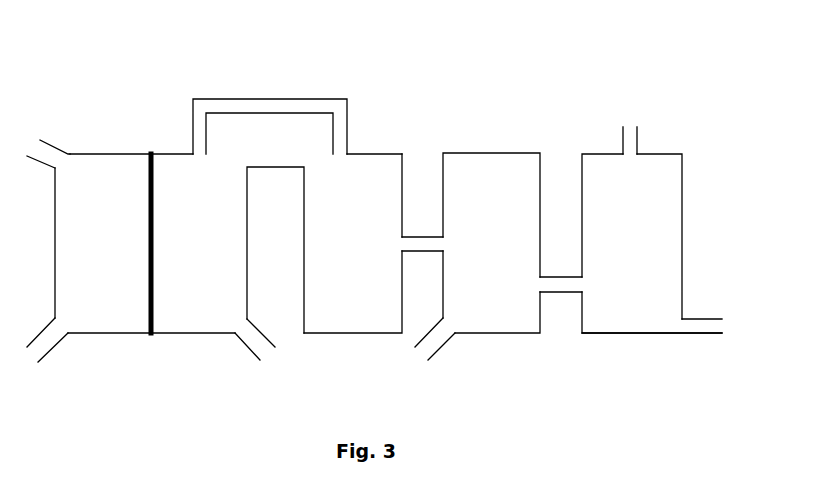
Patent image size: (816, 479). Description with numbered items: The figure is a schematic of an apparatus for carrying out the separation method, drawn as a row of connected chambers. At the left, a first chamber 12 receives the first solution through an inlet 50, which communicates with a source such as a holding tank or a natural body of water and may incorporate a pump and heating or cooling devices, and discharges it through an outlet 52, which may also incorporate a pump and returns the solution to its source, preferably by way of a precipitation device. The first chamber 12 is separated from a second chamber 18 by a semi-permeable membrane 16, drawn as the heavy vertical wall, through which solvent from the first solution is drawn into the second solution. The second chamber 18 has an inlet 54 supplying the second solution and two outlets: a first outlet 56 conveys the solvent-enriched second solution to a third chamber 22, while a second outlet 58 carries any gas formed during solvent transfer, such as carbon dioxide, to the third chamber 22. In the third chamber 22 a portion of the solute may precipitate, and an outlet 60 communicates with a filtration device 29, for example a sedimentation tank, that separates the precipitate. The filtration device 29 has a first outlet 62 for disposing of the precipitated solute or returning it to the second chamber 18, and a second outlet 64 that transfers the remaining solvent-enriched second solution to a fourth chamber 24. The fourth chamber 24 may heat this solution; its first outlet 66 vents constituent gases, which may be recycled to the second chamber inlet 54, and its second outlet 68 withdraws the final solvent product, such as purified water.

The first chamber 12 is at (103, 243).
The semi-permeable membrane 16 is at (152, 154).
The second chamber 18 is at (276, 243).
The third chamber 22 is at (353, 243).
The fourth chamber 24 is at (652, 243).
The filtration device 29 is at (491, 243).
The inlet 50 is at (56, 141).
The outlet 52 is at (53, 347).
The inlet 54 is at (245, 344).
The first outlet 56 is at (277, 167).
The second outlet 58 is at (262, 99).
The outlet 60 is at (430, 237).
The first outlet 62 is at (443, 346).
The second outlet 64 is at (568, 277).
The first outlet 66 is at (623, 140).
The second outlet 68 is at (708, 333).